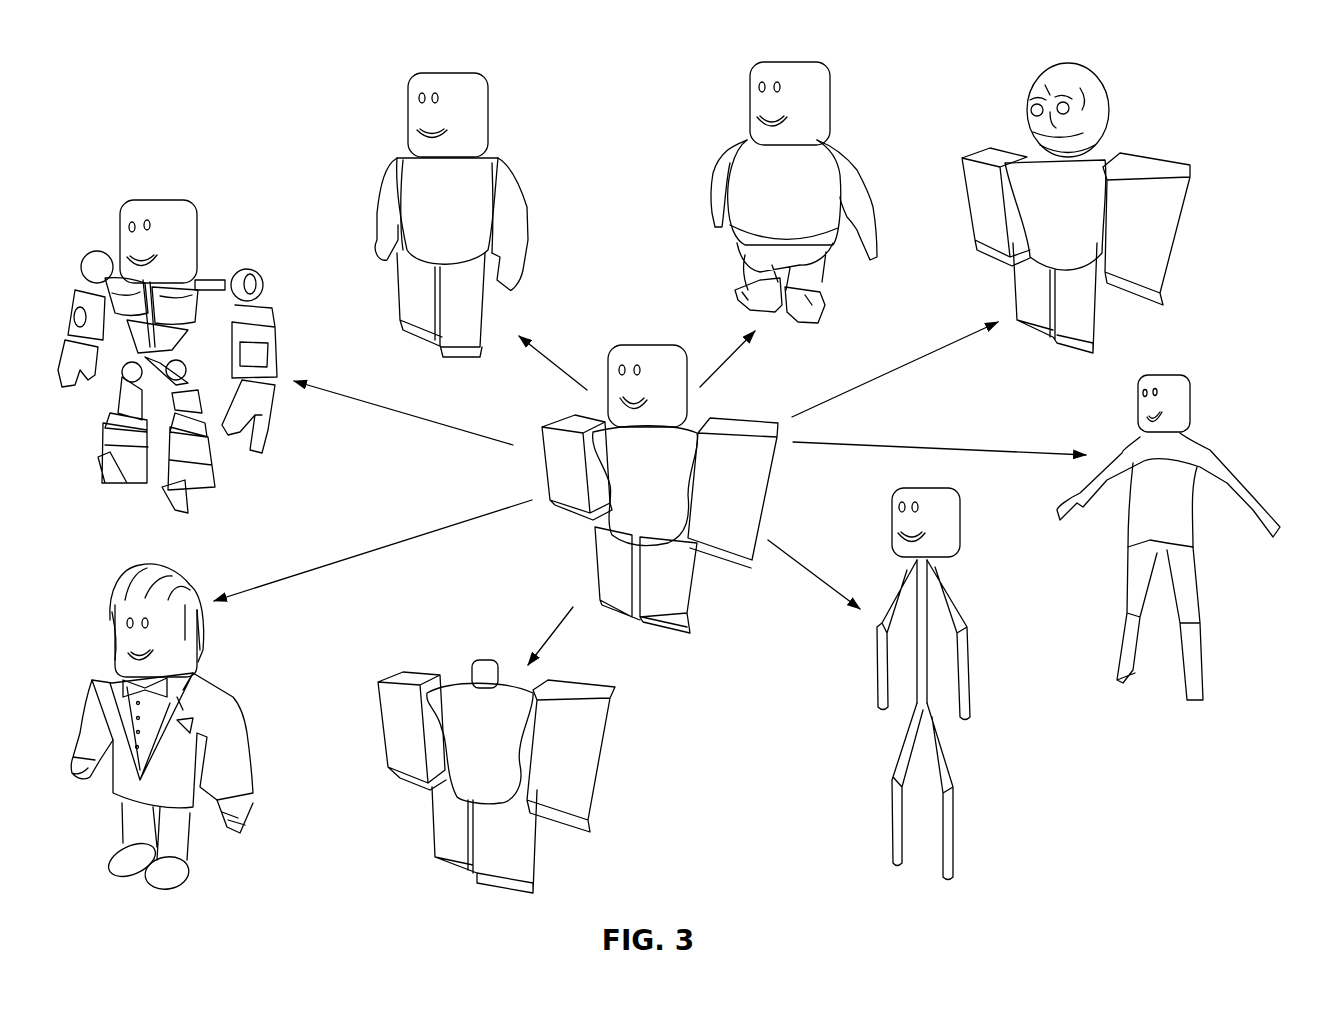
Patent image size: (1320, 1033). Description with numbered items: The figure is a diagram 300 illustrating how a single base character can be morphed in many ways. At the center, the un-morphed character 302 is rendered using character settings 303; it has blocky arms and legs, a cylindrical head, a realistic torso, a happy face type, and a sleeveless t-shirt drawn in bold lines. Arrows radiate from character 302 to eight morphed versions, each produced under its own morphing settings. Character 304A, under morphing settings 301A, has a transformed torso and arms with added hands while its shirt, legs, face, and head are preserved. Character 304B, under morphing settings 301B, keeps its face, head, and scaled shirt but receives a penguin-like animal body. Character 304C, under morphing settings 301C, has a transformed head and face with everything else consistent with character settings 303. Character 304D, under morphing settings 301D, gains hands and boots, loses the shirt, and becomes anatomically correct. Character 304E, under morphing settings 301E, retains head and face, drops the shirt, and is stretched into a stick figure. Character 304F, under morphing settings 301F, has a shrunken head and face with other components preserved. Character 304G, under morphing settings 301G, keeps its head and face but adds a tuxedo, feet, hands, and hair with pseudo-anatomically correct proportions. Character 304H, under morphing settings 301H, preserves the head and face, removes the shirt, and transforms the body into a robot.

The diagram 300 is at (133, 73).
The character 302 is at (660, 474).
The character settings 303 is at (751, 631).
The character 304A is at (451, 201).
The character 304B is at (794, 175).
The character 304C is at (1076, 192).
The character 304D is at (1168, 521).
The character 304E is at (923, 669).
The character 304F is at (496, 759).
The character 304G is at (162, 713).
The character 304H is at (167, 335).
The morphing settings 301A is at (560, 166).
The morphing settings 301B is at (900, 151).
The morphing settings 301C is at (1197, 119).
The morphing settings 301D is at (1250, 583).
The morphing settings 301E is at (1012, 773).
The morphing settings 301F is at (660, 776).
The morphing settings 301G is at (278, 678).
The morphing settings 301H is at (298, 251).